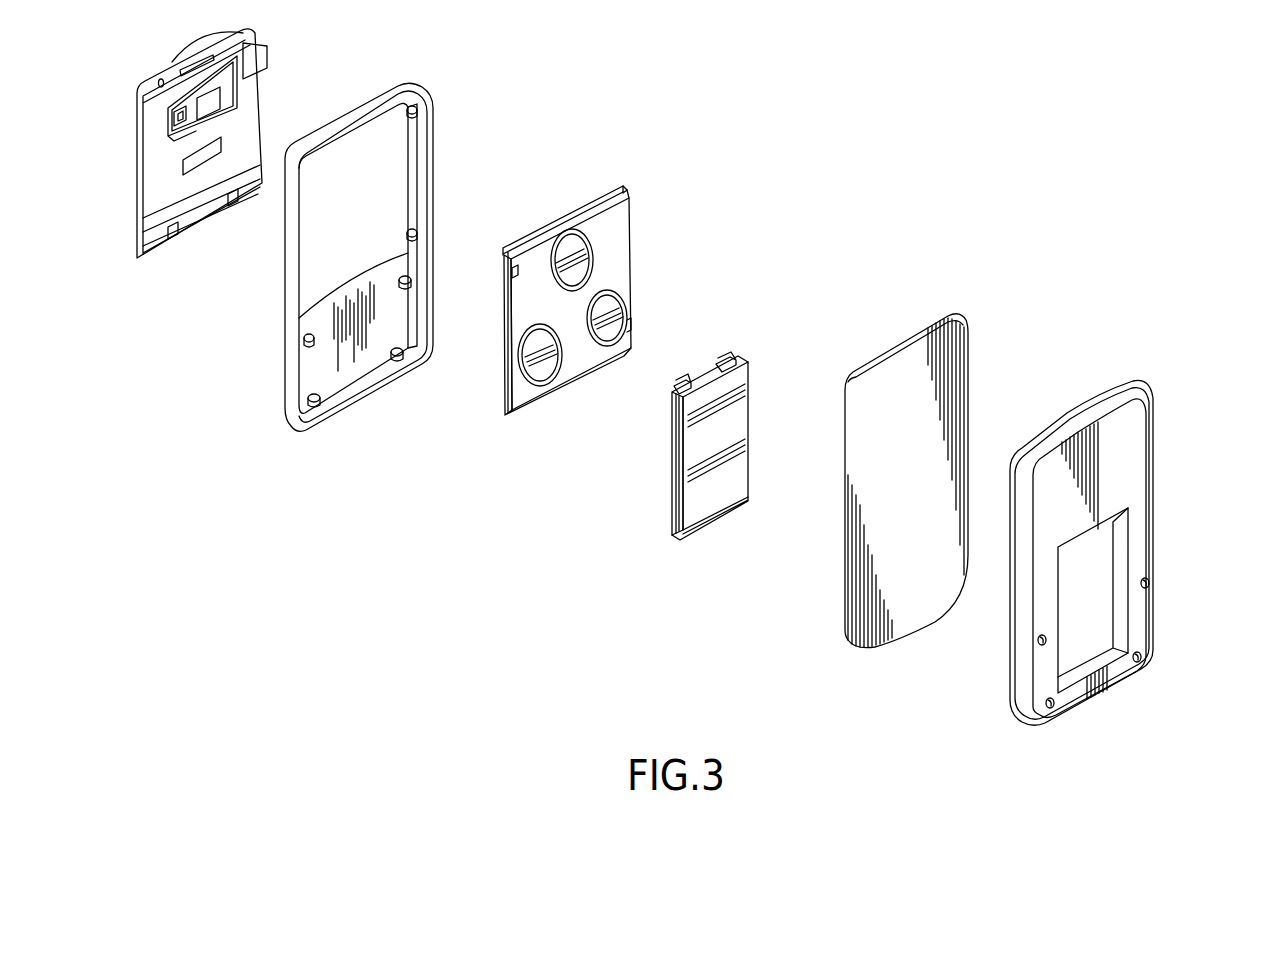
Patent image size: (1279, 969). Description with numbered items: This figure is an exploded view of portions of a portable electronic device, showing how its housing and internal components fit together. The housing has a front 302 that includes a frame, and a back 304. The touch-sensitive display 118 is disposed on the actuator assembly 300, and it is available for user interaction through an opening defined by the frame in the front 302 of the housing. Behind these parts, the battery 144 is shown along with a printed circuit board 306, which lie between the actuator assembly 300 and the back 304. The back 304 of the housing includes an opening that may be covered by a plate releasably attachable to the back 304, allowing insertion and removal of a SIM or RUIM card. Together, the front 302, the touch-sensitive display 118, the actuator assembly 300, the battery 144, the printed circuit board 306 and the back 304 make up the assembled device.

The touch-sensitive display 118 is at (253, 92).
The front 302 is at (413, 83).
The actuator assembly 300 is at (623, 233).
The battery 144 is at (735, 425).
The printed circuit board 306 is at (958, 345).
The back 304 is at (1143, 432).